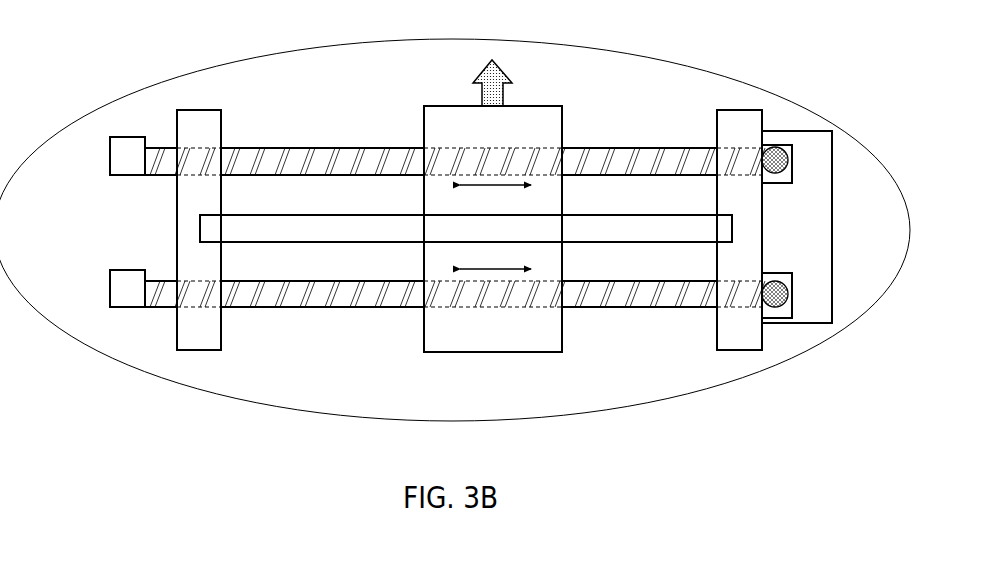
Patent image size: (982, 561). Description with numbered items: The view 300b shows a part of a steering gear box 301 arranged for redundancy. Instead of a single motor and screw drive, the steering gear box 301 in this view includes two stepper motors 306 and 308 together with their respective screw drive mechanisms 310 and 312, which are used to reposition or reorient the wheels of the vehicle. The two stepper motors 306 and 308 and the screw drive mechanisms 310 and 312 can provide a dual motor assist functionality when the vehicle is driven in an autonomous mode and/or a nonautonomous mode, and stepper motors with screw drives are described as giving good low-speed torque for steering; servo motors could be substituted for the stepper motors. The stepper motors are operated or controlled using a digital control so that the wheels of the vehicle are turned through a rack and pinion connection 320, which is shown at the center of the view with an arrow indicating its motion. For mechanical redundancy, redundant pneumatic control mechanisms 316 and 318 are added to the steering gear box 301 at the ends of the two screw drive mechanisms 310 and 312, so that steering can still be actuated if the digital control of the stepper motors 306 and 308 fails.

The view 300b is at (788, 55).
The steering gear box 301 is at (190, 74).
The stepper motor 306 is at (787, 146).
The stepper motor 308 is at (786, 306).
The screw drive mechanism 310 is at (296, 147).
The screw drive mechanism 312 is at (288, 309).
The redundant pneumatic control mechanism 316 is at (109, 157).
The redundant pneumatic control mechanism 318 is at (109, 299).
The rack and pinion connection 320 is at (478, 100).